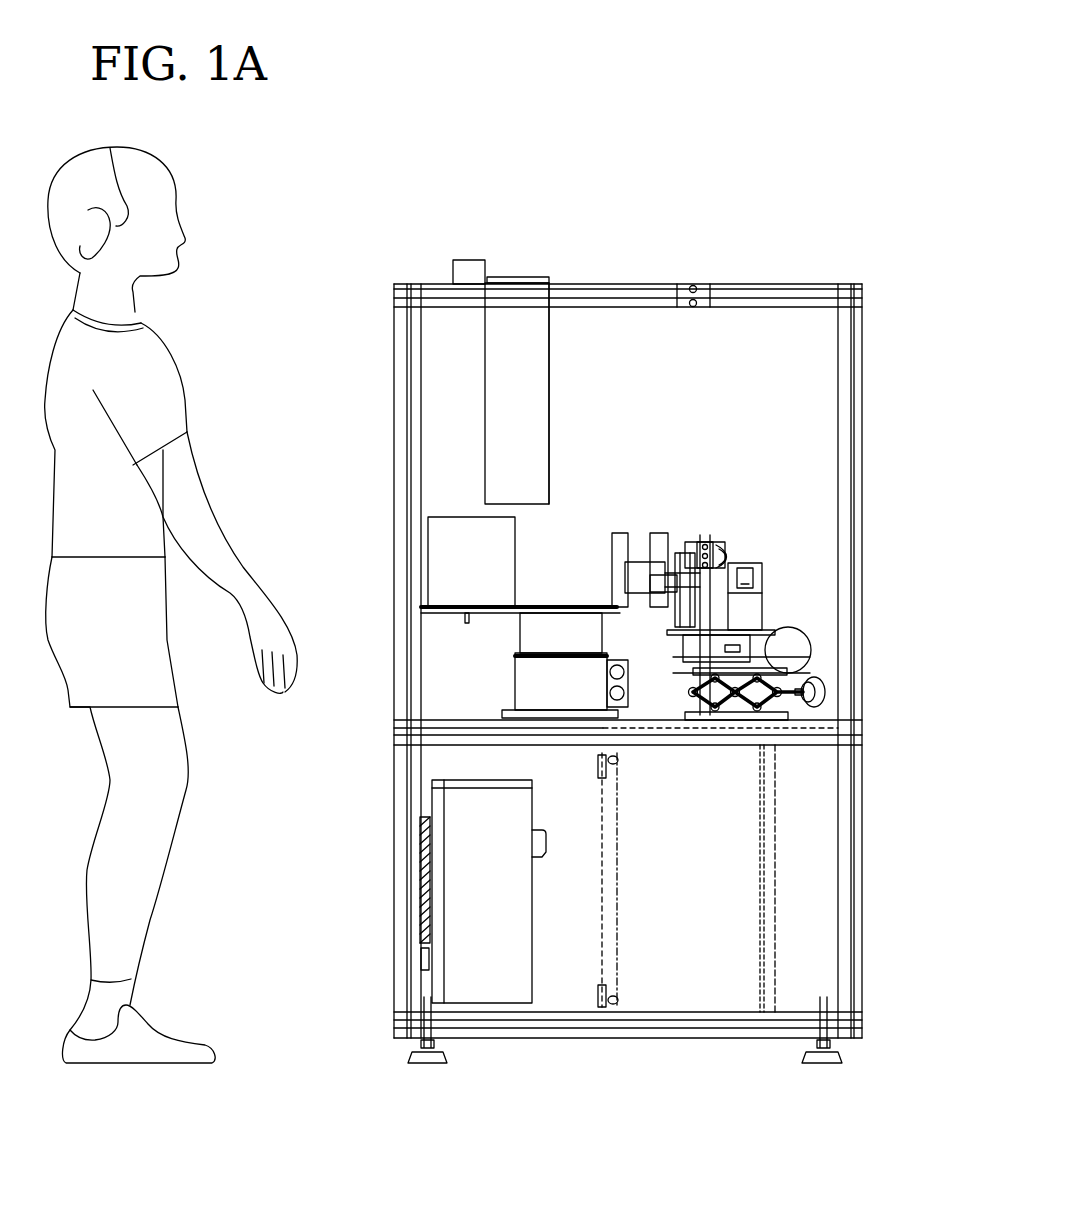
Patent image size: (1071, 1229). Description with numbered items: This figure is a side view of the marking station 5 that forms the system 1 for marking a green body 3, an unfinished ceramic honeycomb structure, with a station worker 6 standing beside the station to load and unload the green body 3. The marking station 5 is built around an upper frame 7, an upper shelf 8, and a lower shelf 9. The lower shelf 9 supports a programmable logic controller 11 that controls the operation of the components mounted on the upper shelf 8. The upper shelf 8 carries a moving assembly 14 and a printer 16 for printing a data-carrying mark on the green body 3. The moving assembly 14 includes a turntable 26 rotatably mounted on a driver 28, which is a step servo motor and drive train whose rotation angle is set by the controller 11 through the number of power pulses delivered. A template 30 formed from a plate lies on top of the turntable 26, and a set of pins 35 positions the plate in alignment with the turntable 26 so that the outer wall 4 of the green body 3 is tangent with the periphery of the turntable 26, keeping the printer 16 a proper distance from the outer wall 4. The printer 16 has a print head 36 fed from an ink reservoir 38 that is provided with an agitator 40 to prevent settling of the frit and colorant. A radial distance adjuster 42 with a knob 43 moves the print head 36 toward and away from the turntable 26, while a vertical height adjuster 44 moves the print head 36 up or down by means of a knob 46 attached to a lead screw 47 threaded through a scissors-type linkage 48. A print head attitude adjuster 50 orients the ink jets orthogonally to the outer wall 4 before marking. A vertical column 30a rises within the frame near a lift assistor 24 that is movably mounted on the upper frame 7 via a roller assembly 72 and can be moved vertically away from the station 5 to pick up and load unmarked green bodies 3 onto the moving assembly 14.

The system 1 is at (333, 205).
The green body 3 is at (458, 540).
The outer wall 4 is at (420, 570).
The marking station 5 is at (588, 634).
The station worker 6 is at (218, 449).
The upper frame 7 is at (733, 285).
The upper shelf 8 is at (390, 742).
The lower shelf 9 is at (393, 1013).
The programmable logic controller 11 is at (453, 807).
The moving assembly 14 is at (547, 592).
The printer 16 is at (765, 553).
The lift assistor 24 is at (520, 272).
The turntable 26 is at (488, 614).
The driver 28 is at (522, 690).
The template 30 is at (421, 604).
The vertical column 30a is at (522, 423).
The pins 35 is at (466, 624).
The print head 36 is at (630, 560).
The ink reservoir 38 is at (738, 560).
The agitator 40 is at (747, 580).
The radial distance adjuster 42 is at (800, 615).
The knob 43 is at (790, 650).
The vertical height adjuster 44 is at (845, 693).
The knob 46 is at (825, 675).
The lead screw 47 is at (742, 700).
The scissors-type linkage 48 is at (803, 700).
The print head attitude adjuster 50 is at (720, 533).
The roller assembly 72 is at (550, 283).